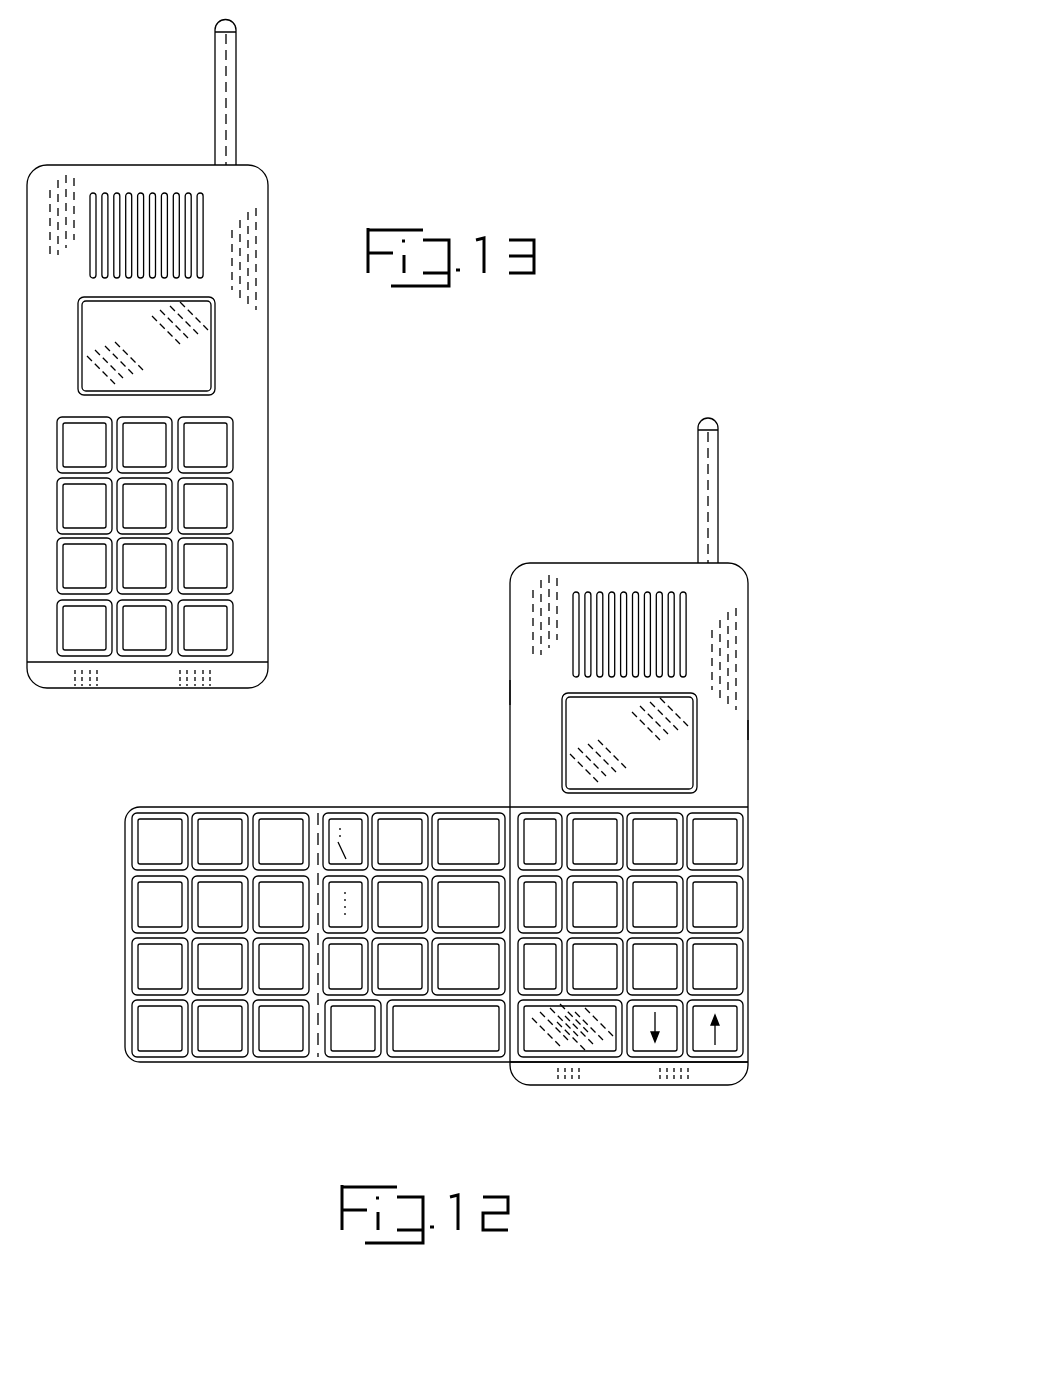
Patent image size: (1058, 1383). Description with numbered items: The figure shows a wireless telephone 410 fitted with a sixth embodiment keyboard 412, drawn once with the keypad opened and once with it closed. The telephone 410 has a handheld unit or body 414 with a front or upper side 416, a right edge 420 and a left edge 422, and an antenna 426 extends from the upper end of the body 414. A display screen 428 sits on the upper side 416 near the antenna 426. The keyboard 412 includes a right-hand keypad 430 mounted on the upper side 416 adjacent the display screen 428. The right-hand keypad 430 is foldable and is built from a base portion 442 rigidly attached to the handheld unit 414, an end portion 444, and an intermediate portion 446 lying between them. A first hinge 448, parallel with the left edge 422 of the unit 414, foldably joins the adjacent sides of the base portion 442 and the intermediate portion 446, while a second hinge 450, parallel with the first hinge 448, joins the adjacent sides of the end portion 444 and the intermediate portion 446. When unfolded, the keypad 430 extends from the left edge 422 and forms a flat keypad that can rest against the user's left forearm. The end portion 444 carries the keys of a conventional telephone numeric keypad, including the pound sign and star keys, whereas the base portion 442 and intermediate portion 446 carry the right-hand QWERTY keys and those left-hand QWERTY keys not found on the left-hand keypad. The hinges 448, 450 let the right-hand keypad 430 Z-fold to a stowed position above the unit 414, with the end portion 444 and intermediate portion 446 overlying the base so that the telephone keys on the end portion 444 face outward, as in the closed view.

In FIG. 12, the wireless telephone 410 is at (609, 732).
In FIG. 12, the keyboard 412 is at (338, 805).
In FIG. 13, the handheld unit or body 414 is at (268, 356).
In FIG. 12, the handheld unit or body 414 is at (748, 602).
In FIG. 12, the front or upper side 416 is at (558, 738).
In FIG. 12, the right edge 420 is at (748, 730).
In FIG. 12, the left edge 422 is at (510, 693).
In FIG. 12, the antenna 426 is at (698, 460).
In FIG. 12, the display screen 428 is at (697, 752).
In FIG. 12, the right-hand keypad 430 is at (481, 942).
In FIG. 12, the base portion 442 is at (748, 945).
In FIG. 13, the end portion 444 is at (235, 533).
In FIG. 12, the end portion 444 is at (228, 807).
In FIG. 12, the intermediate portion 446 is at (400, 807).
In FIG. 12, the first hinge 448 is at (505, 1040).
In FIG. 12, the second hinge 450 is at (320, 1040).